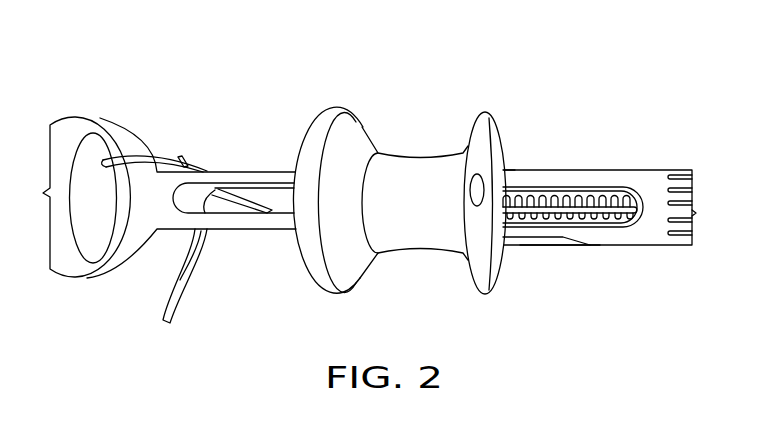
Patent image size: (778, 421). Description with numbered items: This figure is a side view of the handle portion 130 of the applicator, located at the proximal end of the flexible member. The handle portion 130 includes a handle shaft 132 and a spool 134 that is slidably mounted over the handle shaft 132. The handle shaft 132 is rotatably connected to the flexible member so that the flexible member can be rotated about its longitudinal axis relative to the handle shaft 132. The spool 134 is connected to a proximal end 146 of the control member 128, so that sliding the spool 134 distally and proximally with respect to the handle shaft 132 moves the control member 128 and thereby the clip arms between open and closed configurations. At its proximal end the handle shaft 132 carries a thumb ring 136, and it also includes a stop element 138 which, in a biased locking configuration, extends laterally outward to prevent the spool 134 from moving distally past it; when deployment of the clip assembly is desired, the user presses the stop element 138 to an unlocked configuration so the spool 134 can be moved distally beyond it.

The handle portion 130 is at (276, 110).
The thumb ring 136 is at (62, 120).
The spool 134 is at (427, 167).
The proximal end of the control member 146 is at (509, 162).
The handle shaft 132 is at (550, 169).
The control member 128 is at (578, 213).
The stop element 138 is at (552, 248).